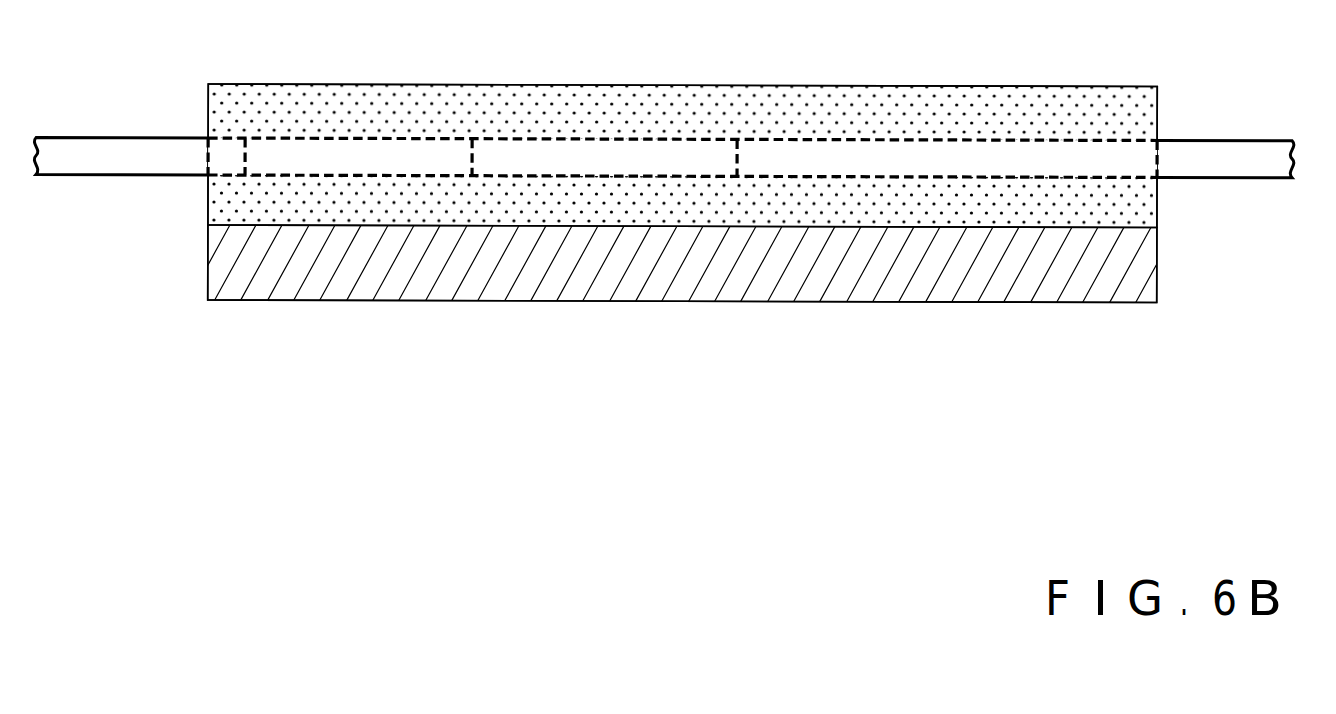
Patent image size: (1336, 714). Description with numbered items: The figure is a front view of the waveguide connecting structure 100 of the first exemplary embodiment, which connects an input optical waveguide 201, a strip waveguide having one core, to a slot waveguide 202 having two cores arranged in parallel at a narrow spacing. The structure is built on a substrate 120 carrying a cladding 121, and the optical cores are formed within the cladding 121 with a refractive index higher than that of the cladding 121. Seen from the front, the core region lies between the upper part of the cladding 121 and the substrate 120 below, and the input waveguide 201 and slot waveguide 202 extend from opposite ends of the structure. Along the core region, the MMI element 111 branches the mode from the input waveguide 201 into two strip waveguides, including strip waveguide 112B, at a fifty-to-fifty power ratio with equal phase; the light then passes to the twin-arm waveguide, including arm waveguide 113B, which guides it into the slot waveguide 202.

The waveguide connecting structure 100 is at (1056, 87).
The MMI element 111 is at (313, 136).
The strip waveguide 112B is at (553, 138).
The arm waveguide 113B is at (838, 138).
The substrate 120 is at (1158, 262).
The cladding 121 is at (1158, 209).
The input optical waveguide 201 is at (98, 136).
The slot waveguide 202 is at (1223, 137).